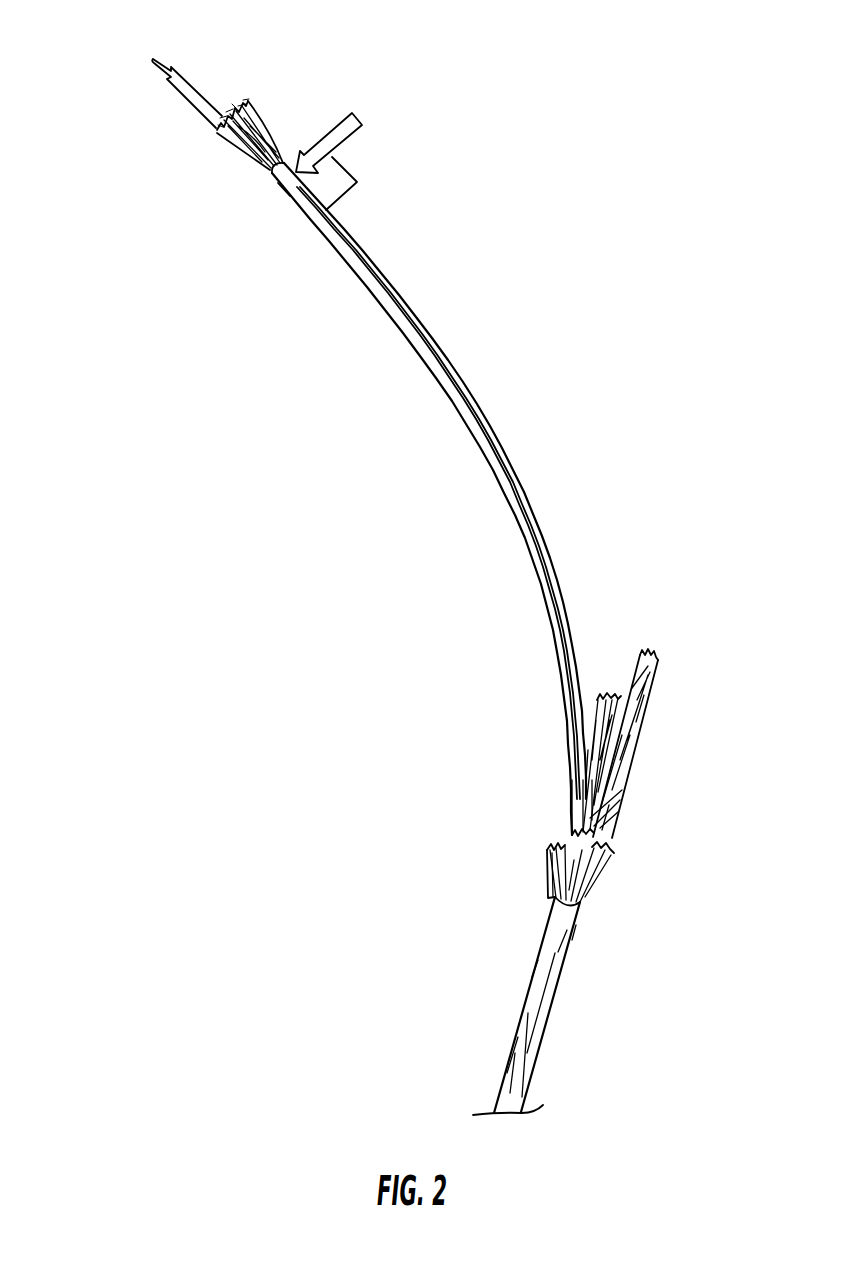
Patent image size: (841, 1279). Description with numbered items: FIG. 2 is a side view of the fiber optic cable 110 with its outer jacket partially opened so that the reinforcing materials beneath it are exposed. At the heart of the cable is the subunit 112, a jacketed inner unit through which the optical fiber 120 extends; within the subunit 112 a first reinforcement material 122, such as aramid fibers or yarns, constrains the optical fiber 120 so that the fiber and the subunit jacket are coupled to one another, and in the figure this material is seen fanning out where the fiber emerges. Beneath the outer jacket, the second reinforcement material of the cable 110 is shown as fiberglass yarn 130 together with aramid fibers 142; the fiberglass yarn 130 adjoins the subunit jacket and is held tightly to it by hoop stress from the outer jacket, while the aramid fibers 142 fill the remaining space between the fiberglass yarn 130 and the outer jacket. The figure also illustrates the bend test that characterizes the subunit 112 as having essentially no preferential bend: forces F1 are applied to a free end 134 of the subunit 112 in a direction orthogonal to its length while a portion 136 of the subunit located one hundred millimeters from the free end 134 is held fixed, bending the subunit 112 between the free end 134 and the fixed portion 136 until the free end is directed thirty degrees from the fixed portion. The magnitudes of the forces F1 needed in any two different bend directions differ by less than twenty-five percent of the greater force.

The fiber optic cable 110 is at (489, 262).
The subunit 112 is at (556, 590).
The optical fiber 120 is at (197, 83).
The first reinforcement material 122 is at (217, 128).
The fiberglass yarn 130 is at (620, 748).
The free end 134 is at (278, 183).
The fixed portion 136 is at (533, 1005).
The aramid fibers 142 is at (600, 860).
The forces F1 is at (329, 149).